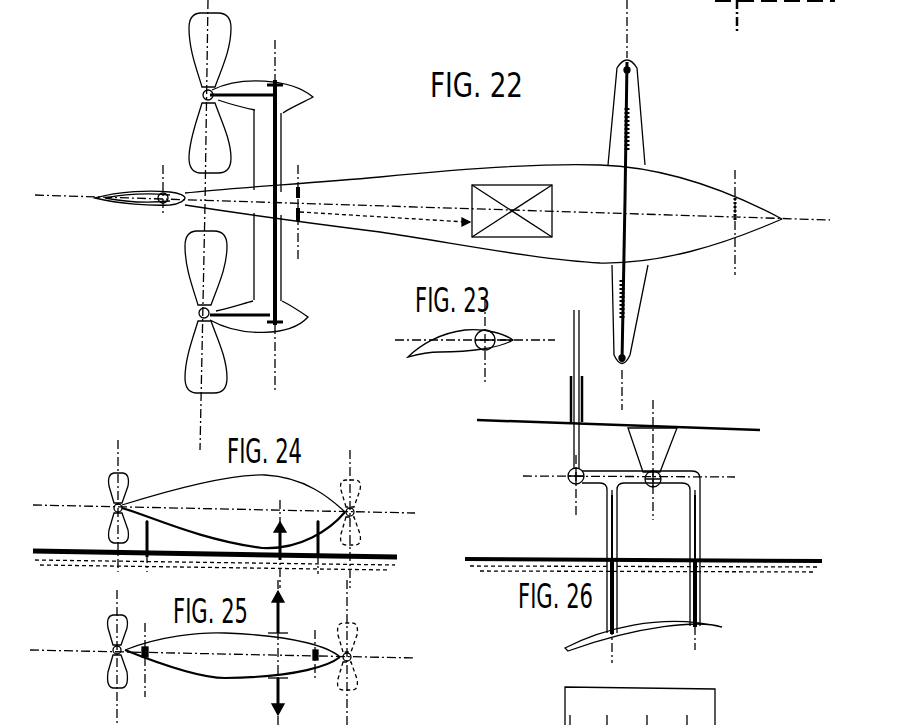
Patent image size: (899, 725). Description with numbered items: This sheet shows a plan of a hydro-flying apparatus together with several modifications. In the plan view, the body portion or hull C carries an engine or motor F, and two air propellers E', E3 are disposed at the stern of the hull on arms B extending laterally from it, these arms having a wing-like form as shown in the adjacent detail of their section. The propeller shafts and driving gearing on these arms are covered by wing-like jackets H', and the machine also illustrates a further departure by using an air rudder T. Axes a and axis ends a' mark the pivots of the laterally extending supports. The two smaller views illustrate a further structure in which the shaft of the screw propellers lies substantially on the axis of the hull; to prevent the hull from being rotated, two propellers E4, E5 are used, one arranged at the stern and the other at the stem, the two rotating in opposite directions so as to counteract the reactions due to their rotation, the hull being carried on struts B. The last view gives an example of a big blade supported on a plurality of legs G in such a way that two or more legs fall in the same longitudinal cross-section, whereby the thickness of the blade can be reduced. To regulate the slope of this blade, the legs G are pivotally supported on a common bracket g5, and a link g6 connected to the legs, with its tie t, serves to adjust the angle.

In FIG. 22, the air rudder T is at (140, 183).
In FIG. 22, the car body C is at (483, 214).
In FIG. 22, the motor / engine box F is at (502, 193).
In FIG. 22, the supporting strut / arm B is at (439, 216).
In FIG. 24, the supporting strut / arm B is at (270, 544).
In FIG. 25, the supporting strut / arm B is at (271, 652).
In FIG. 22, the axis / pivot a is at (516, 214).
In FIG. 22, the axis end / pivot a' is at (645, 205).
In FIG. 22, the wing-like jacket H' is at (278, 196).
In FIG. 22, the air propeller E' is at (193, 102).
In FIG. 22, the propeller E3 is at (196, 268).
In FIG. 24, the propeller E4 is at (112, 482).
In FIG. 25, the propeller E4 is at (110, 623).
In FIG. 24, the propeller E5 is at (355, 492).
In FIG. 25, the propeller E5 is at (356, 628).
In FIG. 26, the common bracket g5 is at (663, 449).
In FIG. 26, the link g6 is at (580, 450).
In FIG. 26, the leg G is at (652, 567).
In FIG. 26, the tie / link t is at (559, 443).